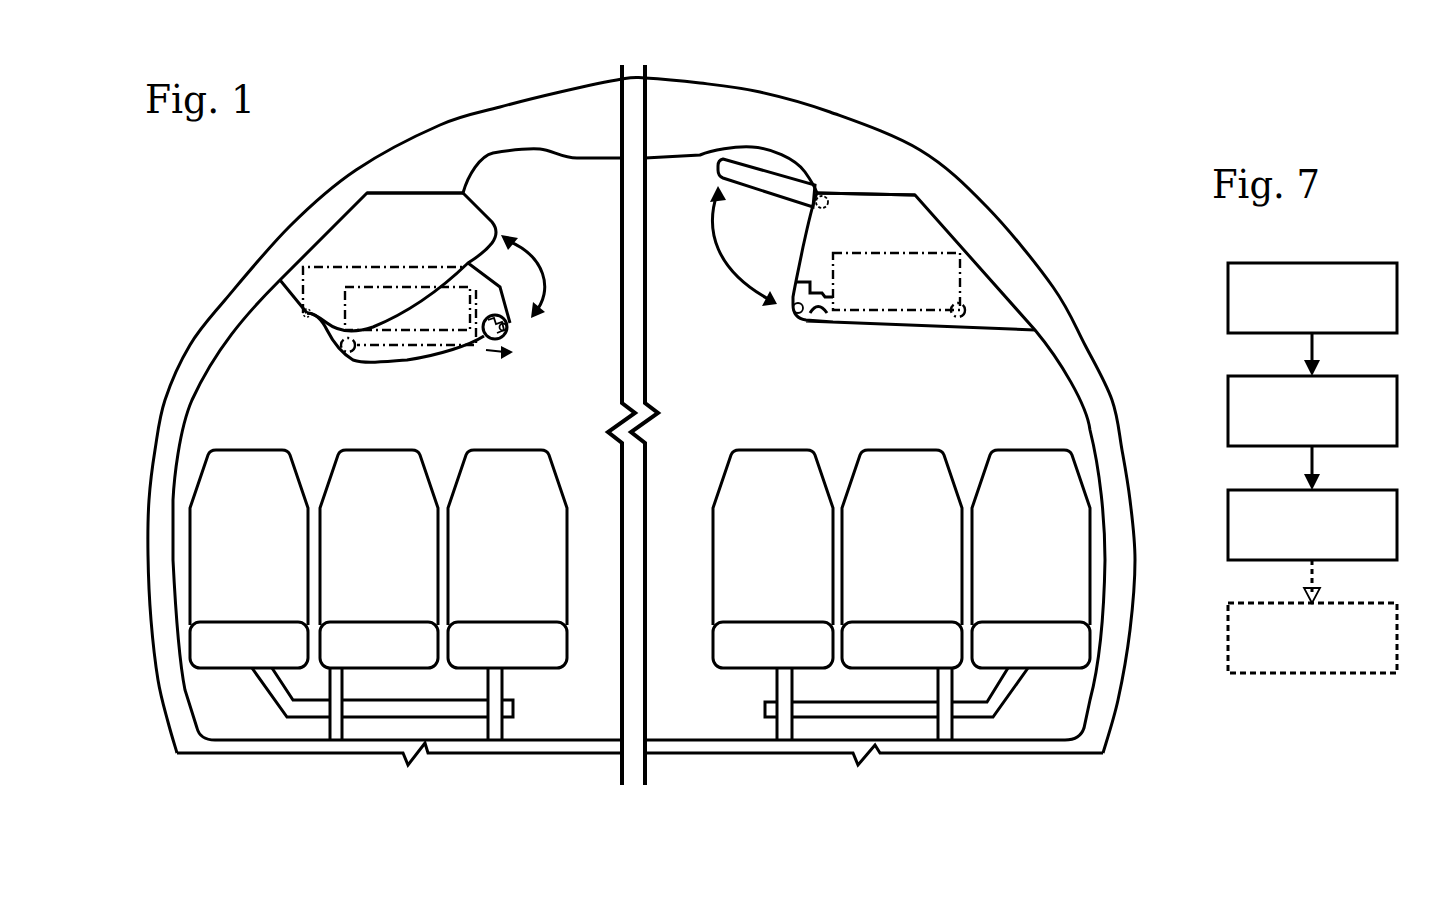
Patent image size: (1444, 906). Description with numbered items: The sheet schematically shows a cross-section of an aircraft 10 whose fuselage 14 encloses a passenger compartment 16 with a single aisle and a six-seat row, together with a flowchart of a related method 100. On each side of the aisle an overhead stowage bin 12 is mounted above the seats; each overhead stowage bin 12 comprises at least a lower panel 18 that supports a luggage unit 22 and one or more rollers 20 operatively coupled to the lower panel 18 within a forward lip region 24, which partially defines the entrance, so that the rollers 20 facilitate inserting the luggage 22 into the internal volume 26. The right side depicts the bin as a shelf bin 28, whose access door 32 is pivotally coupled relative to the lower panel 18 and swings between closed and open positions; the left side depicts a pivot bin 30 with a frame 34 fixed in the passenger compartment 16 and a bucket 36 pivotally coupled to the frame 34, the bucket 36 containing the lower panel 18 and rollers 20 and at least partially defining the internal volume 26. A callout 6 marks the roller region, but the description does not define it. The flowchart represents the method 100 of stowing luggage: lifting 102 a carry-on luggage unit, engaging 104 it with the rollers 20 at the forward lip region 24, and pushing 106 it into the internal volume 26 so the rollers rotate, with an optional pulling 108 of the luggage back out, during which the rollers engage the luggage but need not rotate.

In FIG. 1, the aircraft 10 is at (1062, 119).
In FIG. 1, the overhead stowage bin 12 is at (373, 170).
In FIG. 1, the fuselage 14 is at (1033, 267).
In FIG. 1, the passenger compartment 16 is at (1018, 368).
In FIG. 1, the lower panel 18 is at (487, 320).
In FIG. 1, the rollers 20 is at (512, 328).
In FIG. 1, the luggage unit 22 is at (386, 287).
In FIG. 1, the forward lip region 24 is at (485, 361).
In FIG. 1, the internal volume 26 is at (629, 301).
In FIG. 1, the shelf bin 28 is at (876, 224).
In FIG. 1, the pivot bin 30 is at (375, 272).
In FIG. 1, the access door 32 is at (773, 170).
In FIG. 1, the frame 34 is at (427, 192).
In FIG. 1, the bucket 36 is at (382, 364).
In FIG. 1, the direction 6 is at (508, 353).
In FIG. 7, the method of stowing luggage 100 is at (1380, 217).
In FIG. 7, the lifting 102 is at (1345, 262).
In FIG. 7, the engaging 104 is at (1345, 375).
In FIG. 7, the pushing 106 is at (1345, 489).
In FIG. 7, the pulling 108 is at (1345, 602).